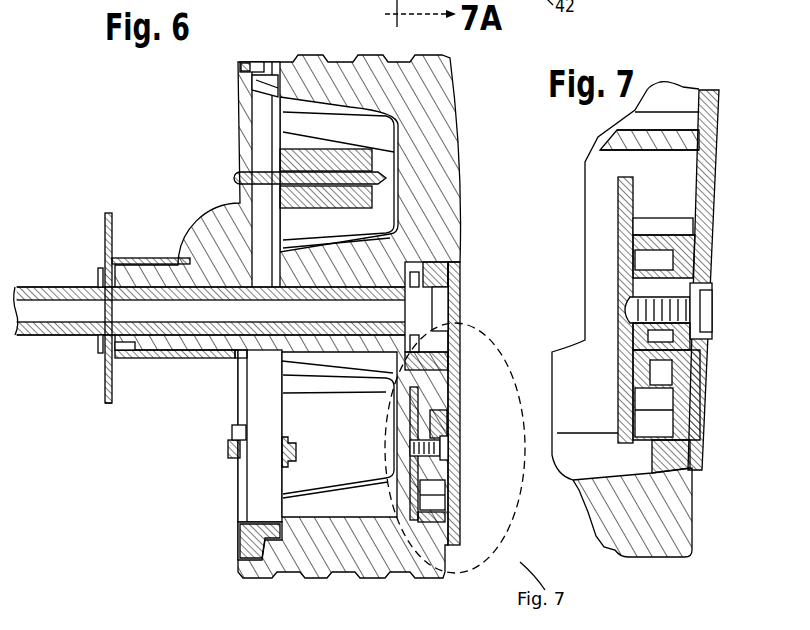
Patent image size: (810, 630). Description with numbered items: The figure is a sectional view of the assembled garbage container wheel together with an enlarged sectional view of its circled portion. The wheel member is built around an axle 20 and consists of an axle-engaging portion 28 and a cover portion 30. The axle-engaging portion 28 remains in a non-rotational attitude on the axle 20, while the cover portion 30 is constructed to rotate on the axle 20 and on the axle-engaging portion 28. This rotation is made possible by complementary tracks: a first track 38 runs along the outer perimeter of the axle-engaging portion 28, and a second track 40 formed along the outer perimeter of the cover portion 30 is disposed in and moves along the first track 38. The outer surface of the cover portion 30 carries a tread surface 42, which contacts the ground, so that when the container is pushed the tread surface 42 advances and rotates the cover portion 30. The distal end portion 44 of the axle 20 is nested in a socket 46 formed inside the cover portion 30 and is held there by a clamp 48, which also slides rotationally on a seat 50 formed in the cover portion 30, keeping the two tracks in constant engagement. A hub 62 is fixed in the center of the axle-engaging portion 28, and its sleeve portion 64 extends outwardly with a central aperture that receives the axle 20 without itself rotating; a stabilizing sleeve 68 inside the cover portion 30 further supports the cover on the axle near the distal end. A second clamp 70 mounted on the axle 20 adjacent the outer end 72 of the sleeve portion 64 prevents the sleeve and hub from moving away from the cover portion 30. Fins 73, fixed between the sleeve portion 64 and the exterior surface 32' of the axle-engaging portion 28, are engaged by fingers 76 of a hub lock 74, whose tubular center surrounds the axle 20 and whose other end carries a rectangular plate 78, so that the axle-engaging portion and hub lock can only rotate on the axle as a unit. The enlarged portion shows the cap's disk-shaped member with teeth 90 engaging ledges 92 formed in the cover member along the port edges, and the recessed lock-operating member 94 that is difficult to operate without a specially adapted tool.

In FIG. 6, the axle 20 is at (48, 338).
In FIG. 6, the axle-engaging portion 28 is at (238, 540).
In FIG. 6, the cover portion 30 is at (460, 118).
In FIG. 6, the exterior surface of axle engaging portion 32' is at (231, 175).
In FIG. 6, the first track 38 is at (242, 72).
In FIG. 6, the second track 40 is at (248, 60).
In FIG. 6, the tread surface 42 is at (360, 579).
In FIG. 6, the distal end portion of axle 44 is at (440, 304).
In FIG. 6, the socket 46 is at (448, 322).
In FIG. 6, the clamp 48 is at (420, 346).
In FIG. 6, the seat 50 is at (447, 281).
In FIG. 6, the hub 62 is at (175, 362).
In FIG. 6, the sleeve portion 64 is at (148, 360).
In FIG. 6, the stabilizing sleeve 68 is at (240, 400).
In FIG. 6, the clamp 70 is at (100, 353).
In FIG. 6, the outer end of sleeve portion 72 is at (100, 277).
In FIG. 6, the fins 73 is at (170, 262).
In FIG. 6, the hub lock 74 is at (100, 243).
In FIG. 6, the fingers 76 is at (232, 392).
In FIG. 6, the rectangular plate 78 is at (110, 406).
In FIG. 6, the teeth 90 is at (445, 492).
In FIG. 7, the teeth 90 is at (660, 410).
In FIG. 6, the ledges 92 is at (414, 402).
In FIG. 7, the ledges 92 is at (633, 255).
In FIG. 6, the lock-operating member 94 is at (450, 448).
In FIG. 7, the lock-operating member 94 is at (708, 318).